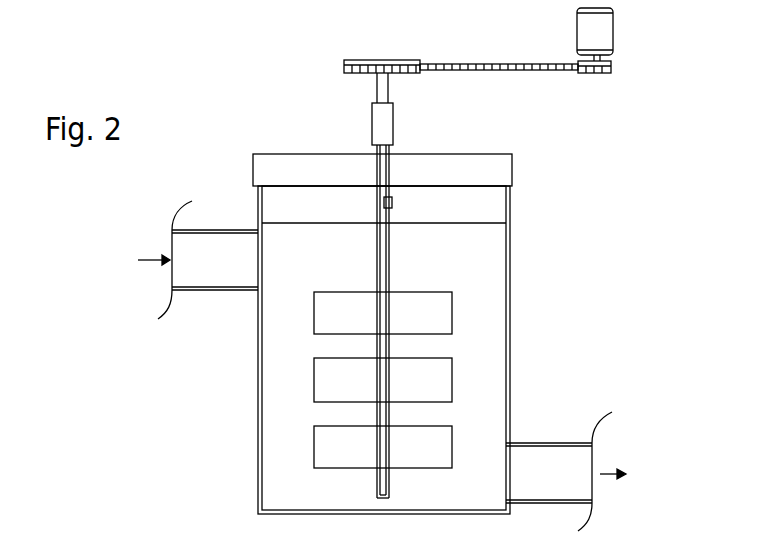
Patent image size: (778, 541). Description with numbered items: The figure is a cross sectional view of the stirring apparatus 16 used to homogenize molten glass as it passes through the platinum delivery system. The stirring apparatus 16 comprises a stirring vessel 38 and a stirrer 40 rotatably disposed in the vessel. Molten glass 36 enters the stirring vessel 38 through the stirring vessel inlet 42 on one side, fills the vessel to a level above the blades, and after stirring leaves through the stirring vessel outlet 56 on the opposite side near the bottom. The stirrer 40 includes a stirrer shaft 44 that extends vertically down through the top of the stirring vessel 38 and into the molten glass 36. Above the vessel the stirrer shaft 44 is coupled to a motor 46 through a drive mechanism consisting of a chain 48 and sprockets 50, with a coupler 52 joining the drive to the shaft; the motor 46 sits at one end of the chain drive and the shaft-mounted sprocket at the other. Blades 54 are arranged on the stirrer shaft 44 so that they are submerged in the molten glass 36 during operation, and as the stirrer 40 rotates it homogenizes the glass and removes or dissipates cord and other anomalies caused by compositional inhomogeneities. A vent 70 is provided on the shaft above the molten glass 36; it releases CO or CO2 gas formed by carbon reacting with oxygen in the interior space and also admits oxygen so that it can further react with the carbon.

The stirring apparatus 16 is at (557, 306).
The molten glass 36 is at (358, 222).
The stirring vessel 38 is at (510, 207).
The stirrer 40 is at (308, 349).
The stirring vessel inlet 42 is at (241, 292).
The stirrer shaft 44 is at (390, 277).
The motor 46 is at (577, 33).
The chain 48 is at (499, 62).
The sprockets 50 is at (344, 74).
The coupler 52 is at (394, 126).
The blades 54 is at (356, 291).
The stirring vessel outlet 56 is at (571, 442).
The vent 70 is at (392, 203).